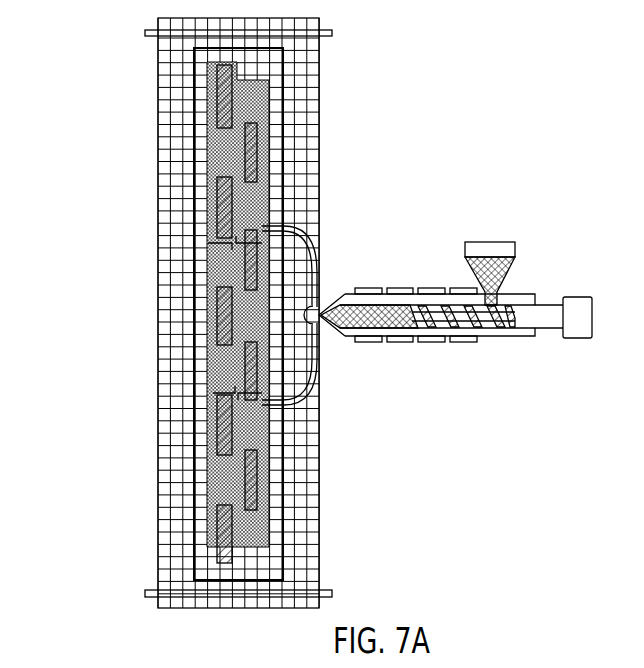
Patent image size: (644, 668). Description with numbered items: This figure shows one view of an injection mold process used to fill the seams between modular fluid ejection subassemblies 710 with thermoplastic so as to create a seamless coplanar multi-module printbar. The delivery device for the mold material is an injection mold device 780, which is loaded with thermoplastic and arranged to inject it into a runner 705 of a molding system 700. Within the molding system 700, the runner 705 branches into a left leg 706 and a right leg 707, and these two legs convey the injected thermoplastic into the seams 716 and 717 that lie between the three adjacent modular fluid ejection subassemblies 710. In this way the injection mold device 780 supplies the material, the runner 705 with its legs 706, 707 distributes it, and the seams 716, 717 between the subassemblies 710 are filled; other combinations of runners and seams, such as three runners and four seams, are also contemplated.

The molding system 700 is at (99, 47).
The runner 705 is at (322, 300).
The left leg 706 is at (321, 357).
The right leg 707 is at (320, 238).
The modular fluid ejection subassemblies 710 is at (205, 130).
The seam 716 is at (212, 244).
The seam 717 is at (216, 393).
The injection mold device 780 is at (556, 230).